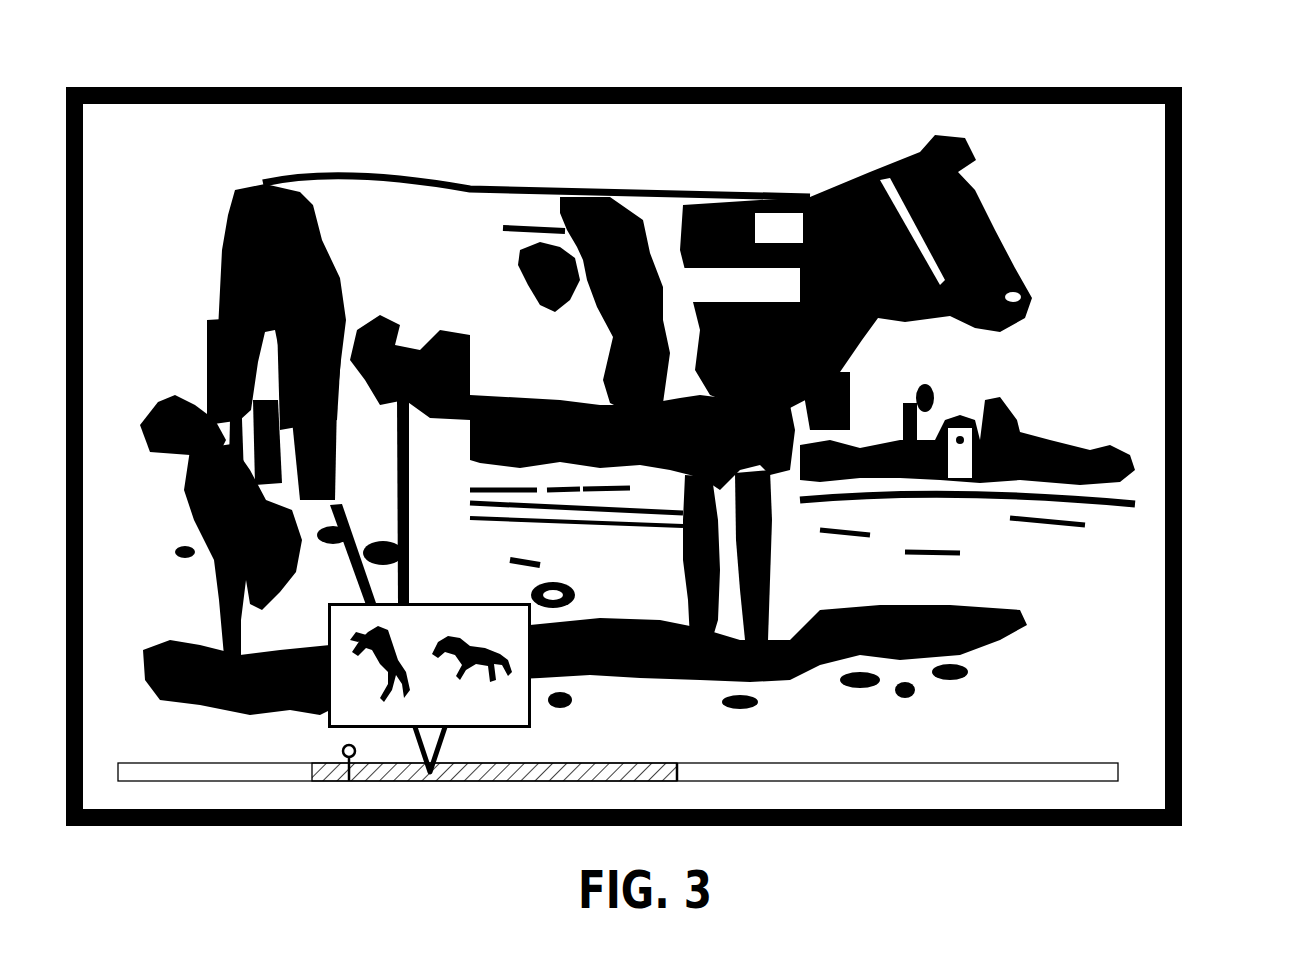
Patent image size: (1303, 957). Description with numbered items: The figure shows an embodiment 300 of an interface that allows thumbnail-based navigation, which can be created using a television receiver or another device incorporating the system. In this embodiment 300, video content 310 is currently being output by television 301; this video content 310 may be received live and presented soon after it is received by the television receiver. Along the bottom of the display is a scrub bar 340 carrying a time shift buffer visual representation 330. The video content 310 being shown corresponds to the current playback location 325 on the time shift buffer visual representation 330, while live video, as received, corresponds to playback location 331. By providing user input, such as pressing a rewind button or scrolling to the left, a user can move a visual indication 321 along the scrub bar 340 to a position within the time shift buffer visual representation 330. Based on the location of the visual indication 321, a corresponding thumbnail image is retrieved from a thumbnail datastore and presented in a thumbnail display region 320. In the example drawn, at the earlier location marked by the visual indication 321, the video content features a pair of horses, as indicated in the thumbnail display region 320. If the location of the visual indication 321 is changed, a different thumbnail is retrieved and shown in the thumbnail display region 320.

The embodiment of thumbnail-based navigation interface 300 is at (1221, 65).
The television 301 is at (98, 87).
The video content 310 is at (1058, 192).
The thumbnail display region 320 is at (489, 603).
The visual indication 321 is at (440, 771).
The current playback location 325 is at (342, 750).
The time shift buffer visual representation 330 is at (618, 771).
The playback location 331 is at (688, 771).
The scrub bar 340 is at (1033, 763).